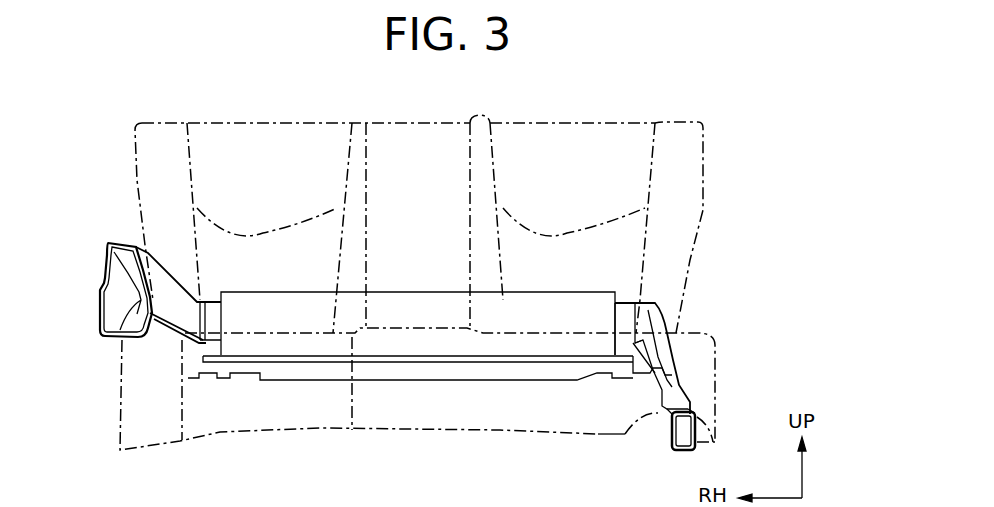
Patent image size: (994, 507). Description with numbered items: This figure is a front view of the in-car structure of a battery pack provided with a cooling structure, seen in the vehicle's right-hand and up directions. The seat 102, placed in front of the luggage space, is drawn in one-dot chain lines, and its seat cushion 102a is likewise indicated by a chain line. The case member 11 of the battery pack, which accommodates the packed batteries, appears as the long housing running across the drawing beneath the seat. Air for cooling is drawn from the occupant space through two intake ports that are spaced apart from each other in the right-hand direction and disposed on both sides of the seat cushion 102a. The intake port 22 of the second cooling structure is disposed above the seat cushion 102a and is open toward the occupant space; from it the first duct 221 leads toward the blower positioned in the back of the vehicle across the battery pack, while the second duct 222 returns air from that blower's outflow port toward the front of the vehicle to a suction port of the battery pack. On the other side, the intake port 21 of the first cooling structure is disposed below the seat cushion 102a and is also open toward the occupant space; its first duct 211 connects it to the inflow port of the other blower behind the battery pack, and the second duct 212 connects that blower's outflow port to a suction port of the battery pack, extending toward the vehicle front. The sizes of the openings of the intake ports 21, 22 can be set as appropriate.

The seat 102 is at (126, 151).
The seat cushion 102a is at (291, 330).
The case member 11 is at (240, 286).
The intake port 22 is at (118, 300).
The first duct 221 is at (163, 330).
The second duct 222 is at (213, 337).
The second duct 212 is at (625, 337).
The first duct 211 is at (650, 314).
The intake port 21 is at (672, 437).